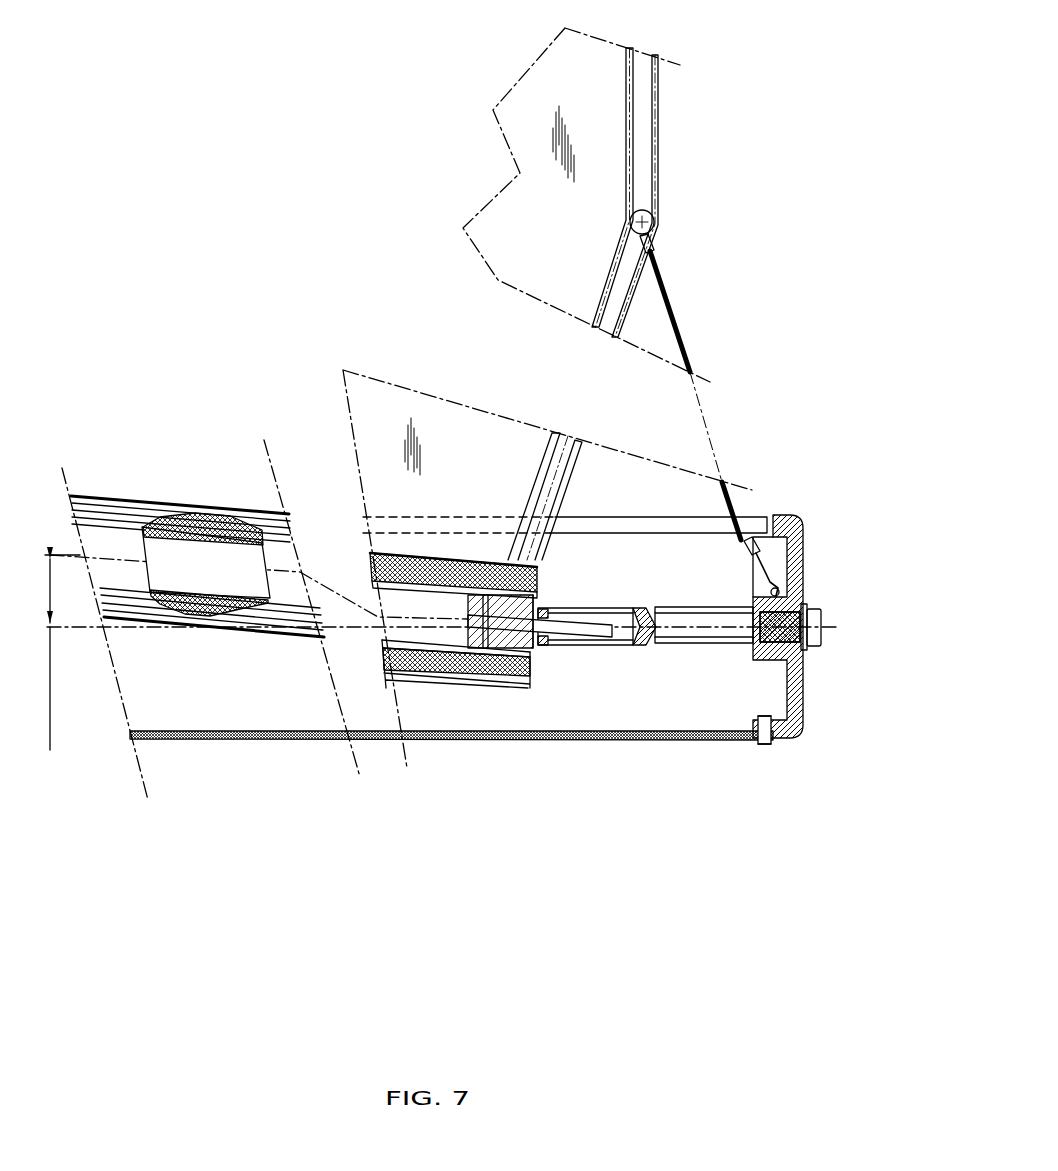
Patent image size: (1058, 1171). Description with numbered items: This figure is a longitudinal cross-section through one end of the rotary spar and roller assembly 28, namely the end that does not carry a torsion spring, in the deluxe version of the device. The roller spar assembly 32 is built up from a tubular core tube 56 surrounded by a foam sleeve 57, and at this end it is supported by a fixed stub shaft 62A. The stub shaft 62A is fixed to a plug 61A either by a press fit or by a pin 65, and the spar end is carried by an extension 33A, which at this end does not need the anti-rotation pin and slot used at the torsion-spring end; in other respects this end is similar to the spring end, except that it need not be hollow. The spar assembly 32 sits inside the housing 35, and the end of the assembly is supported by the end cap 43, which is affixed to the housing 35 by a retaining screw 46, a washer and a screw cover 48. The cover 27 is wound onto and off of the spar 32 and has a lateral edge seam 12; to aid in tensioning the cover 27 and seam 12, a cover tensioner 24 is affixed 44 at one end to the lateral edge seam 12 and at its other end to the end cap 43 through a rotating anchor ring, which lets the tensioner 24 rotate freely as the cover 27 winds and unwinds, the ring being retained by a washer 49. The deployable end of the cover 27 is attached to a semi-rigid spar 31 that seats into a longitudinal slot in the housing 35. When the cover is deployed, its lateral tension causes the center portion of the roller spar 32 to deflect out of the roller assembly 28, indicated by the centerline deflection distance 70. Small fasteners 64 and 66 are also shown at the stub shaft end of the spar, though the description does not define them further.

The lateral edge seam 12 is at (647, 188).
The cover tensioner 24 is at (694, 360).
The cover 27 is at (503, 225).
The roller assembly 28 is at (608, 900).
The semi-rigid spar 31 is at (753, 512).
The roller spar assembly 32 is at (161, 481).
The extension 33A is at (679, 664).
The housing 35 is at (507, 744).
The end cap 43 is at (800, 553).
The tensioner attachment 44 is at (657, 219).
The retaining screw 46 is at (825, 600).
The screw cover 48 is at (780, 627).
The washer 49 is at (764, 669).
The tubular core tube 56 is at (384, 571).
The foam sleeve 57 is at (430, 687).
The plug 61A is at (502, 590).
The fixed stub shaft 62A is at (591, 620).
The fastener 64 is at (550, 657).
The pin 65 is at (523, 586).
The fastener 66 is at (537, 652).
The centerline deflection distance 70 is at (60, 665).